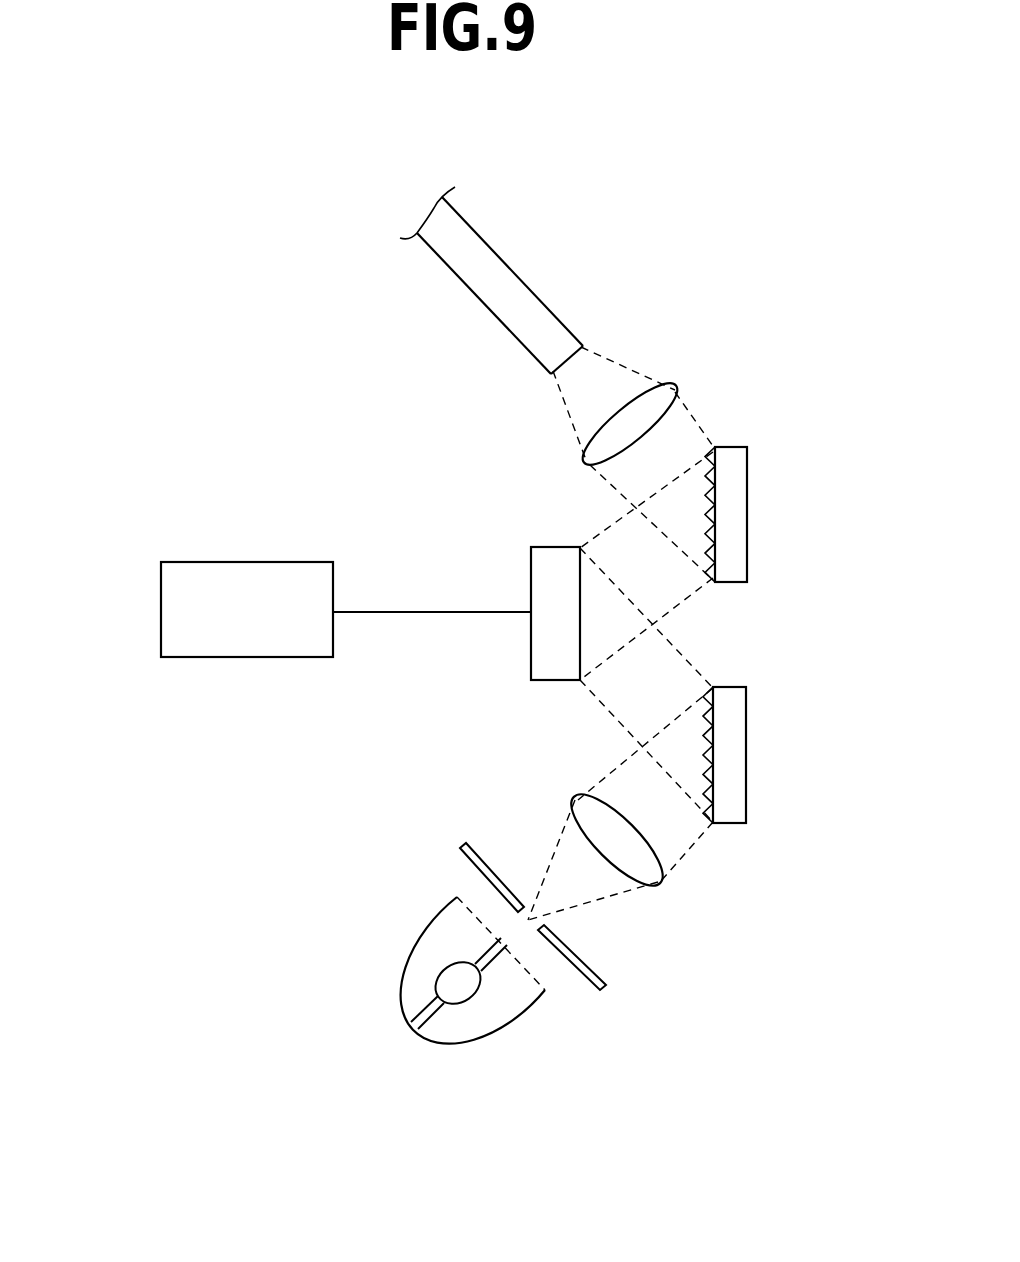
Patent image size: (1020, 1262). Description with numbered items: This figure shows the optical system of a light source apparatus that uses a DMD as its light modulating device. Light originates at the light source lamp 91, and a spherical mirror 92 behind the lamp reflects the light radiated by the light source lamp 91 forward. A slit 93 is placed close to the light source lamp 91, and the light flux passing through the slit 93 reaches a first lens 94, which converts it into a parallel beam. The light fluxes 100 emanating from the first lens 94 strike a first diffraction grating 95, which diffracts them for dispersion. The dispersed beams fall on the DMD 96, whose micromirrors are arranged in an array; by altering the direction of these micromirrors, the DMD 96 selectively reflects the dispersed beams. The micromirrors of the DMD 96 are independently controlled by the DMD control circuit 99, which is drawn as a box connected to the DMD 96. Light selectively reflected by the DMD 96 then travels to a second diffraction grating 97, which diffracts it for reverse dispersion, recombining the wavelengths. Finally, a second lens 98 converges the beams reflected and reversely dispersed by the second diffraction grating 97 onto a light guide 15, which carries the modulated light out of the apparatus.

The light guide 15 is at (513, 272).
The light source lamp 91 is at (420, 1007).
The spherical mirror 92 is at (513, 1020).
The slit 93 is at (600, 1000).
The first lens 94 is at (658, 882).
The first diffraction grating 95 is at (746, 758).
The DMD 96 is at (531, 570).
The second diffraction grating 97 is at (747, 520).
The second lens 98 is at (676, 388).
The DMD control circuit 99 is at (160, 612).
The light fluxes 100 is at (612, 893).